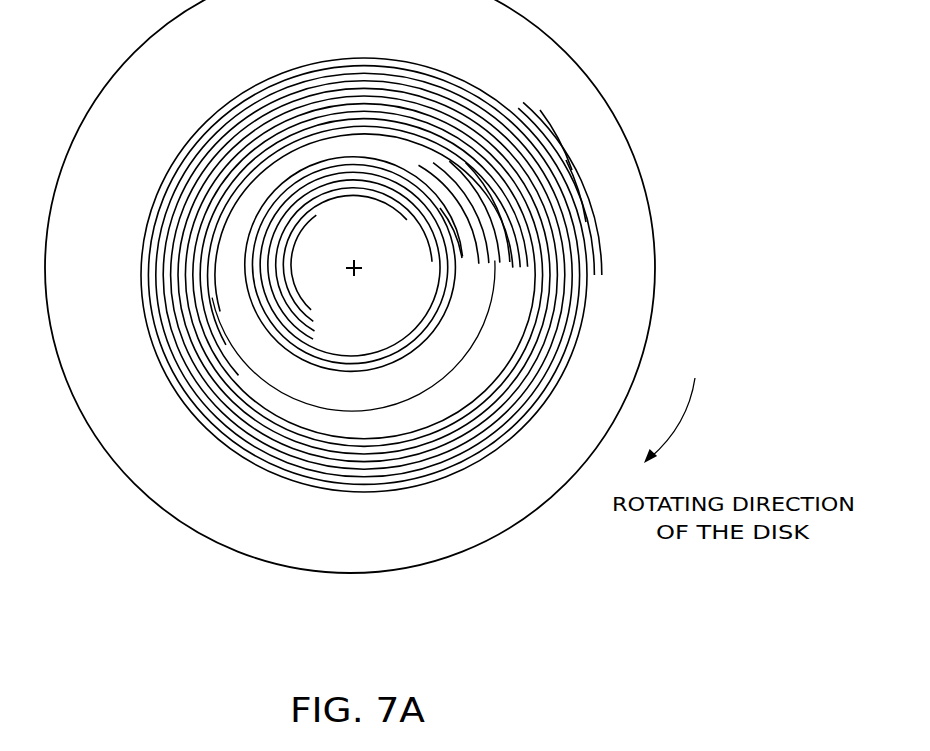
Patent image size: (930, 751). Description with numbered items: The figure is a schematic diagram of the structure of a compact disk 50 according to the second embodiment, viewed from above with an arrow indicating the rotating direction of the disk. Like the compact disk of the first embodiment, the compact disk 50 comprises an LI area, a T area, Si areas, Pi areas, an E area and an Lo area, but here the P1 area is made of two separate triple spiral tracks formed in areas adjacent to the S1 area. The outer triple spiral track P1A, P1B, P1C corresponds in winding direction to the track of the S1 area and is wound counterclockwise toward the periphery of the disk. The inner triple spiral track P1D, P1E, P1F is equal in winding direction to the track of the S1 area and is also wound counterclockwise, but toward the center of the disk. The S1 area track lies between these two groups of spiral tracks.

The compact disk 50 is at (60, 42).
The triple spiral track P1A is at (512, 124).
The triple spiral track P1B is at (557, 163).
The triple spiral track P1C is at (583, 213).
The triple spiral track P1D is at (417, 165).
The triple spiral track P1E is at (437, 183).
The triple spiral track P1F is at (457, 232).
The S1 area S1 is at (368, 410).